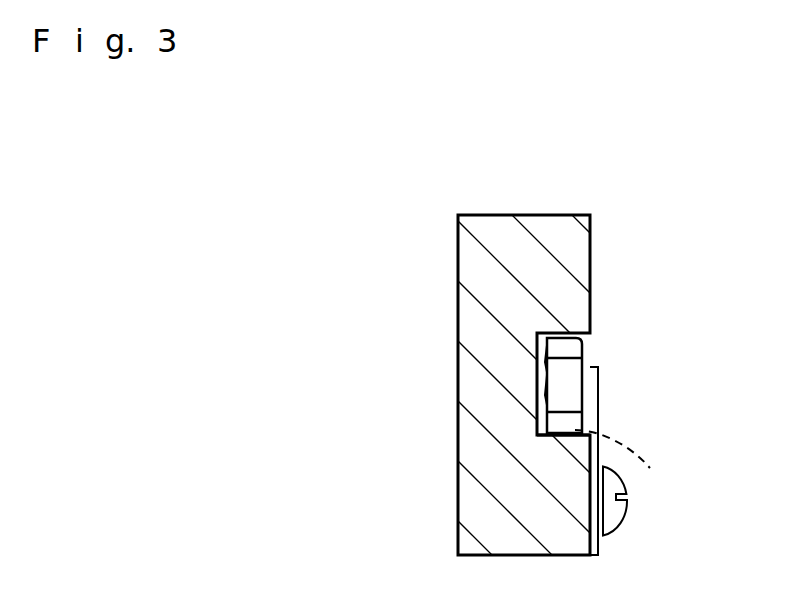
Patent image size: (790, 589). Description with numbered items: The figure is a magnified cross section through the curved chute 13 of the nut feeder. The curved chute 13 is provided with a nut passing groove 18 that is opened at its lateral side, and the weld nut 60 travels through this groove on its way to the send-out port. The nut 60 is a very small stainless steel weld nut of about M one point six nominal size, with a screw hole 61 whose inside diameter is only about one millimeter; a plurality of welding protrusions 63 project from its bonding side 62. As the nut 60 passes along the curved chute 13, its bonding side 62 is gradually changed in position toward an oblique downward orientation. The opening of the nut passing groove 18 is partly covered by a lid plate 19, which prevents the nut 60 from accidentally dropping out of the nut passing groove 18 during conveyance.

The curved chute 13 is at (458, 247).
The nut passing groove 18 is at (537, 420).
The lid plate 19 is at (598, 390).
The weld nut 60 is at (586, 345).
The screw hole 61 is at (635, 483).
The bonding side 62 is at (545, 351).
The welding protrusions 63 is at (540, 384).